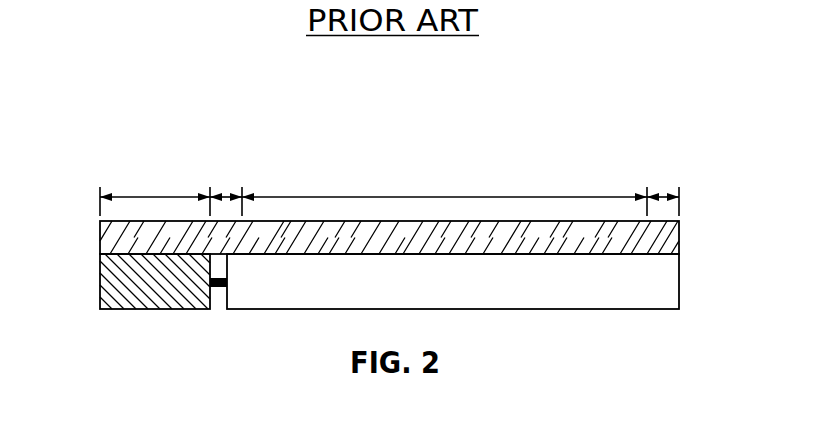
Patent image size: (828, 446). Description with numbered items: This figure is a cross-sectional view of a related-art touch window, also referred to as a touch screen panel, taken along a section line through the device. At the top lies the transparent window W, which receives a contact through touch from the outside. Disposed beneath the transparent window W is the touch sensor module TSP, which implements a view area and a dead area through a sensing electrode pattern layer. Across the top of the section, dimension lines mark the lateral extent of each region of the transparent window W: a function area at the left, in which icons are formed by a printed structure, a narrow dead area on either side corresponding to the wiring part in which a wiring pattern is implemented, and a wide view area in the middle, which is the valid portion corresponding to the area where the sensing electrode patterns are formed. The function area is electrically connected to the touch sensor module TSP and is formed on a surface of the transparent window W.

The transparent window W is at (112, 238).
The touch sensor module TSP is at (680, 280).